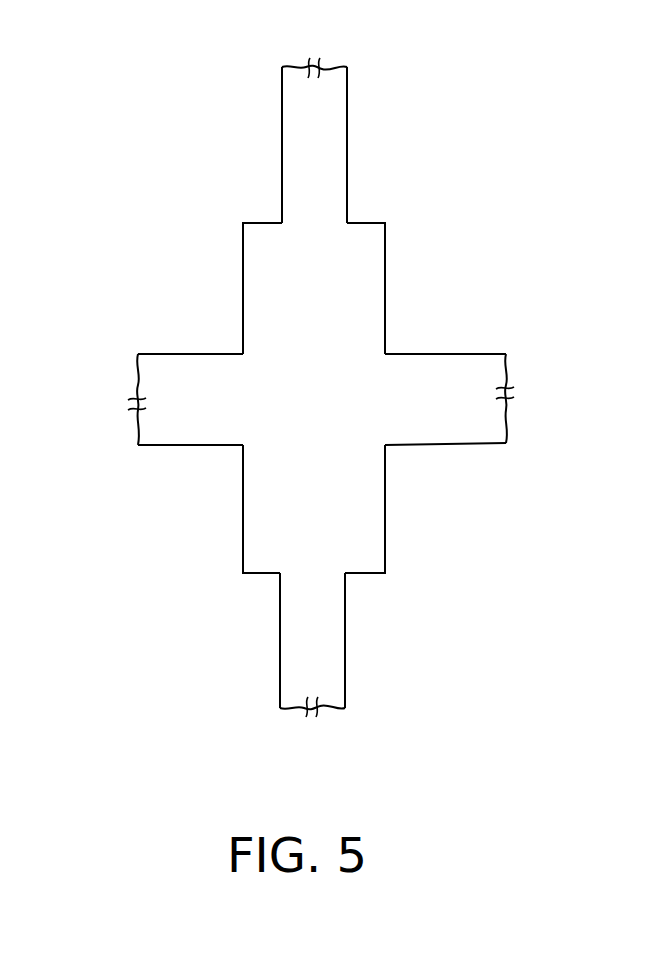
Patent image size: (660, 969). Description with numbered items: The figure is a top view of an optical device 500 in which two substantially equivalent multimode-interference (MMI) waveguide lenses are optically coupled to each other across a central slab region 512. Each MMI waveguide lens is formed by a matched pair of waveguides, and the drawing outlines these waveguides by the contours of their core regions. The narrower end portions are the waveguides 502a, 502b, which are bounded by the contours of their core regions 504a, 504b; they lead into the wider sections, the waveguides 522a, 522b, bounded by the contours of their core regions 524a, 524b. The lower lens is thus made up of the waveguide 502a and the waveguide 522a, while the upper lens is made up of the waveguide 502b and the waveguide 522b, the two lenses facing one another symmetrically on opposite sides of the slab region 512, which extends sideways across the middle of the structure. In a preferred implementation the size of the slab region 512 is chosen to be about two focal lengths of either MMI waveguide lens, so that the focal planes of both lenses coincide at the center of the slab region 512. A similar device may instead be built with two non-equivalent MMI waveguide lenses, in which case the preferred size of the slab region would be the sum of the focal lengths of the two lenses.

The optical device 500 is at (225, 781).
The waveguide 502a is at (443, 649).
The waveguide 502b is at (420, 139).
The core region 504a is at (300, 648).
The core region 504b is at (282, 113).
The slab region 512 is at (472, 366).
The waveguide 522a is at (443, 512).
The waveguide 522b is at (420, 283).
The core region 524a is at (265, 505).
The core region 524b is at (258, 290).